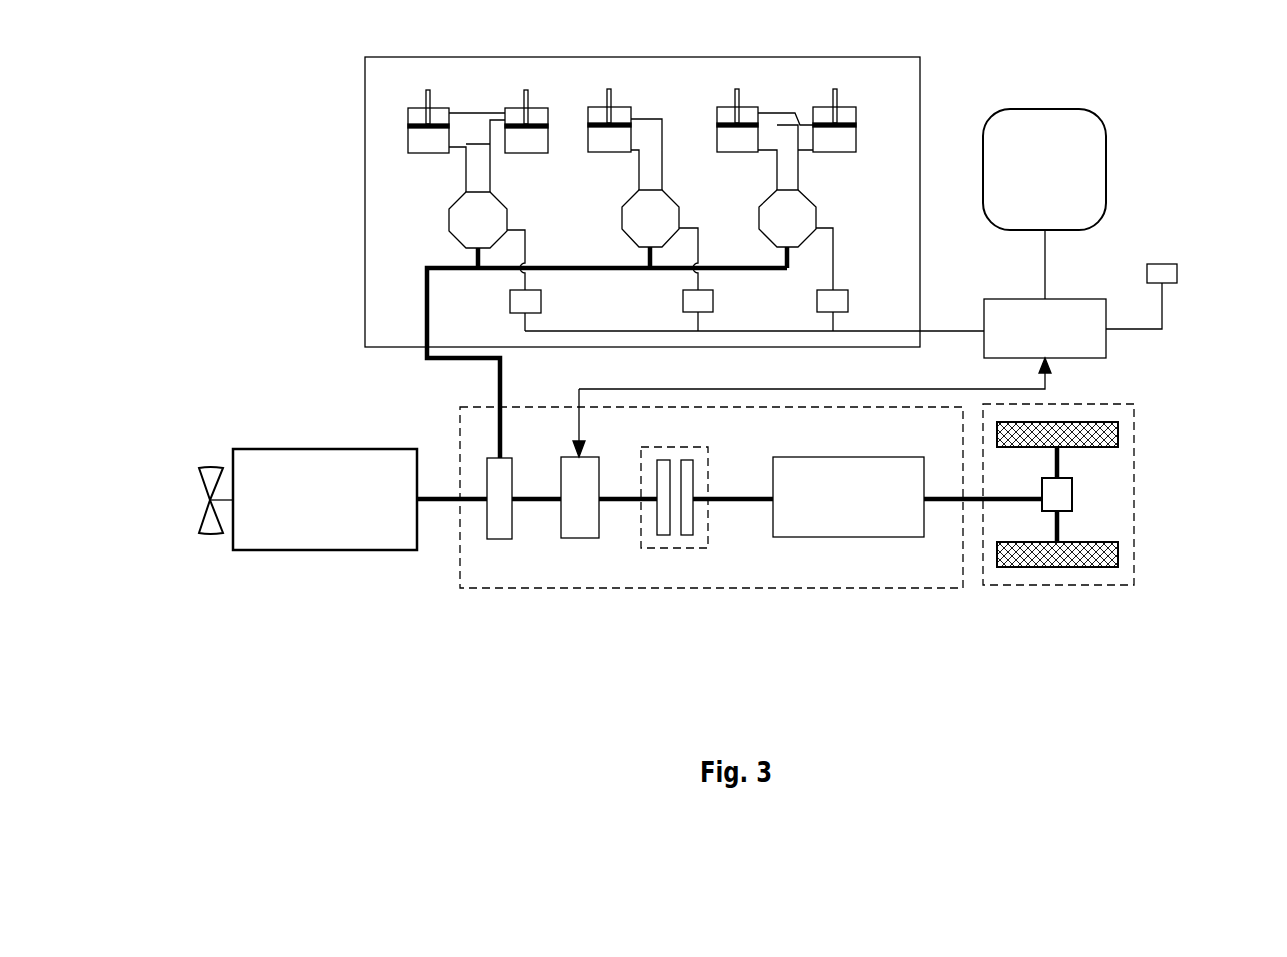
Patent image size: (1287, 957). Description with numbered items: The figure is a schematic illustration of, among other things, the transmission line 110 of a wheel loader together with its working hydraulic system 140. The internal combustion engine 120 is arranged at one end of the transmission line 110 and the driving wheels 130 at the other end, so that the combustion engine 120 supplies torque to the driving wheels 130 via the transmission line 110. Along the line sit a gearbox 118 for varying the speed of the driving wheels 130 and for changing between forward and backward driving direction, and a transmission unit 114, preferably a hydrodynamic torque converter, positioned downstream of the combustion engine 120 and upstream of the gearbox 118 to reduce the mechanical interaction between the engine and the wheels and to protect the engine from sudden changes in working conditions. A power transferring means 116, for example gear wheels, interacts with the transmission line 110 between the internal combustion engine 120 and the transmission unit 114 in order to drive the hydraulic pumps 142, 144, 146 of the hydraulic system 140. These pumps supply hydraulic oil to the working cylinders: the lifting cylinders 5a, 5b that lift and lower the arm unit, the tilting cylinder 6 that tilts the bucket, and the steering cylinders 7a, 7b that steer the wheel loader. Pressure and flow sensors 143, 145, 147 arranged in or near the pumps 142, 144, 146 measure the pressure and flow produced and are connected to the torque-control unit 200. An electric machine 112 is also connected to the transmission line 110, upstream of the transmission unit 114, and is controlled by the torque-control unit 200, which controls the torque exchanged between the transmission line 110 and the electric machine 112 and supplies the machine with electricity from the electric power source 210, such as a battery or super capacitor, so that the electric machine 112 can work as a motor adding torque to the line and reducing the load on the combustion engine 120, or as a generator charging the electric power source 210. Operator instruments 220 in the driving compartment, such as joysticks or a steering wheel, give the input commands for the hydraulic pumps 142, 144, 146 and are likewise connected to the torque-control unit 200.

The working hydraulic system 140 is at (388, 75).
The lifting cylinder 5a is at (441, 112).
The lifting cylinder 5b is at (540, 112).
The tilting cylinder 6 is at (620, 112).
The steering cylinder 7a is at (750, 112).
The steering cylinder 7b is at (846, 112).
The hydraulic pump 142 is at (462, 205).
The hydraulic pump 144 is at (634, 205).
The hydraulic pump 146 is at (772, 205).
The pressure and flow sensor 143 is at (516, 302).
The pressure and flow sensor 145 is at (689, 302).
The pressure and flow sensor 147 is at (826, 302).
The torque-control unit 200 is at (867, 343).
The electric power source 210 is at (1090, 124).
The instruments 220 is at (1180, 268).
The transmission line 110 is at (462, 418).
The electric machine 112 is at (578, 543).
The transmission unit 114 is at (676, 541).
The power transferring means 116 is at (498, 545).
The gearbox 118 is at (838, 542).
The internal combustion engine 120 is at (283, 455).
The driving wheels 130 is at (1122, 461).